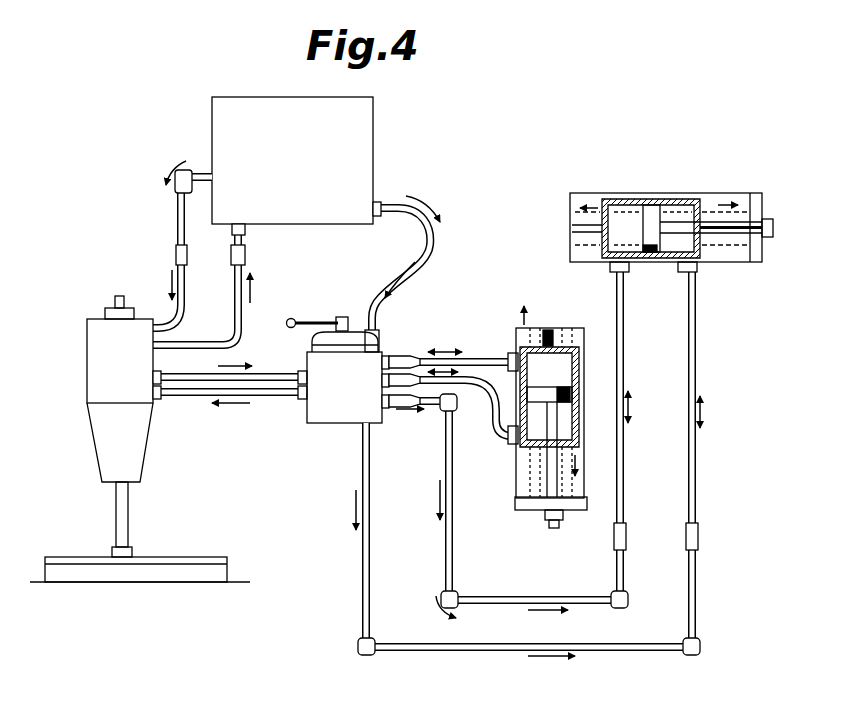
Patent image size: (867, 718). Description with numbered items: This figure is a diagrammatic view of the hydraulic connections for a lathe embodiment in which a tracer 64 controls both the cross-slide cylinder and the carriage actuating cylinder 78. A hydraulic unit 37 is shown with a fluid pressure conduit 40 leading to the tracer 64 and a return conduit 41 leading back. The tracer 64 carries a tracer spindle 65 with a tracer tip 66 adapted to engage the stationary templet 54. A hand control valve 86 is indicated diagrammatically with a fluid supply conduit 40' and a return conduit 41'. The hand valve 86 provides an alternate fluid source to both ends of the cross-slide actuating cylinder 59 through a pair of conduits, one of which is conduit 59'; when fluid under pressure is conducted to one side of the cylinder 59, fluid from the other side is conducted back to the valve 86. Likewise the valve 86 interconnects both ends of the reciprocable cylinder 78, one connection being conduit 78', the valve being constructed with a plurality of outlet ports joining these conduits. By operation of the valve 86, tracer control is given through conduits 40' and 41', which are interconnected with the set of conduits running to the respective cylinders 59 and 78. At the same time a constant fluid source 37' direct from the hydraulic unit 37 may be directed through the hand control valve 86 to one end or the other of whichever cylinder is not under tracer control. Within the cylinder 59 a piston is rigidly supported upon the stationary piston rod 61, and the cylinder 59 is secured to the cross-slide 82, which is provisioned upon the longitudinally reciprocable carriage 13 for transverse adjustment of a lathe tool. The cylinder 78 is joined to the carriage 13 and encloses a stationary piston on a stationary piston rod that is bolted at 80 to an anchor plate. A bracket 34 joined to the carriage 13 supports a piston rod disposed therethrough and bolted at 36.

The hydraulic unit 37 is at (315, 160).
The fluid pressure conduit 40 is at (168, 249).
The return conduit 41 is at (218, 284).
The constant fluid source 37' is at (428, 277).
The tracer 64 is at (100, 363).
The fluid supply conduit 40' is at (230, 364).
The return conduit 41' is at (230, 407).
The hand control valve 86 is at (385, 352).
The conduit 78' is at (453, 346).
The reciprocable cylinder 78 is at (565, 417).
The carriage 13 is at (546, 330).
The bolt 80 is at (548, 520).
The conduit 59' is at (548, 458).
The reciprocable cylinder 59 is at (666, 206).
The bracket 34 is at (755, 193).
The bolt 36 is at (769, 221).
The cross-slide 82 is at (578, 230).
The stationary piston rod 61 is at (736, 236).
The tracer spindle 65 is at (127, 512).
The tracer tip 66 is at (130, 553).
The stationary templet 54 is at (200, 570).